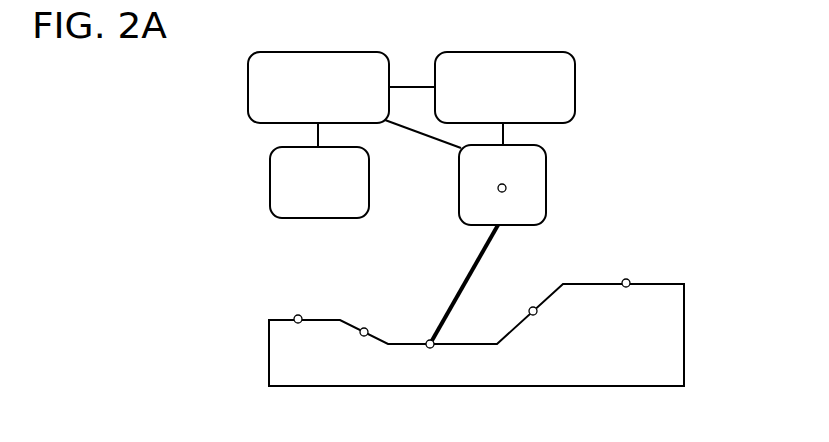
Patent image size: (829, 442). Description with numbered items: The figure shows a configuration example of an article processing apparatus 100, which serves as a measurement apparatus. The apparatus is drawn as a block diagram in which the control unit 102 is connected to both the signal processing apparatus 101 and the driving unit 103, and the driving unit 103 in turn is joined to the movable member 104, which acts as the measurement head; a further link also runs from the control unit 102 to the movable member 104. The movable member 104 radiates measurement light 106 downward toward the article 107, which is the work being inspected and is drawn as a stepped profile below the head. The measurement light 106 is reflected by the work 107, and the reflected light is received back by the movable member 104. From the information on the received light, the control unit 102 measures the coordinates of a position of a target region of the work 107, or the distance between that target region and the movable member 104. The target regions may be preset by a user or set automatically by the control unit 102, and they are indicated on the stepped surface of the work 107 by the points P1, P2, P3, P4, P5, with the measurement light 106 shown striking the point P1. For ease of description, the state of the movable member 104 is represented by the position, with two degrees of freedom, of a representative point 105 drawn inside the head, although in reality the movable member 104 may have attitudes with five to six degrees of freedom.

The article processing apparatus 100 is at (672, 54).
The signal processing apparatus 101 is at (269, 182).
The control unit 102 is at (250, 86).
The driving unit 103 is at (577, 91).
The movable member 104 is at (547, 154).
The representative point 105 is at (507, 187).
The measurement light 106 is at (469, 276).
The article 107 is at (686, 328).
The target region point P1 is at (429, 356).
The target region point P2 is at (361, 345).
The target region point P3 is at (298, 332).
The target region point P4 is at (535, 325).
The target region point P5 is at (627, 296).